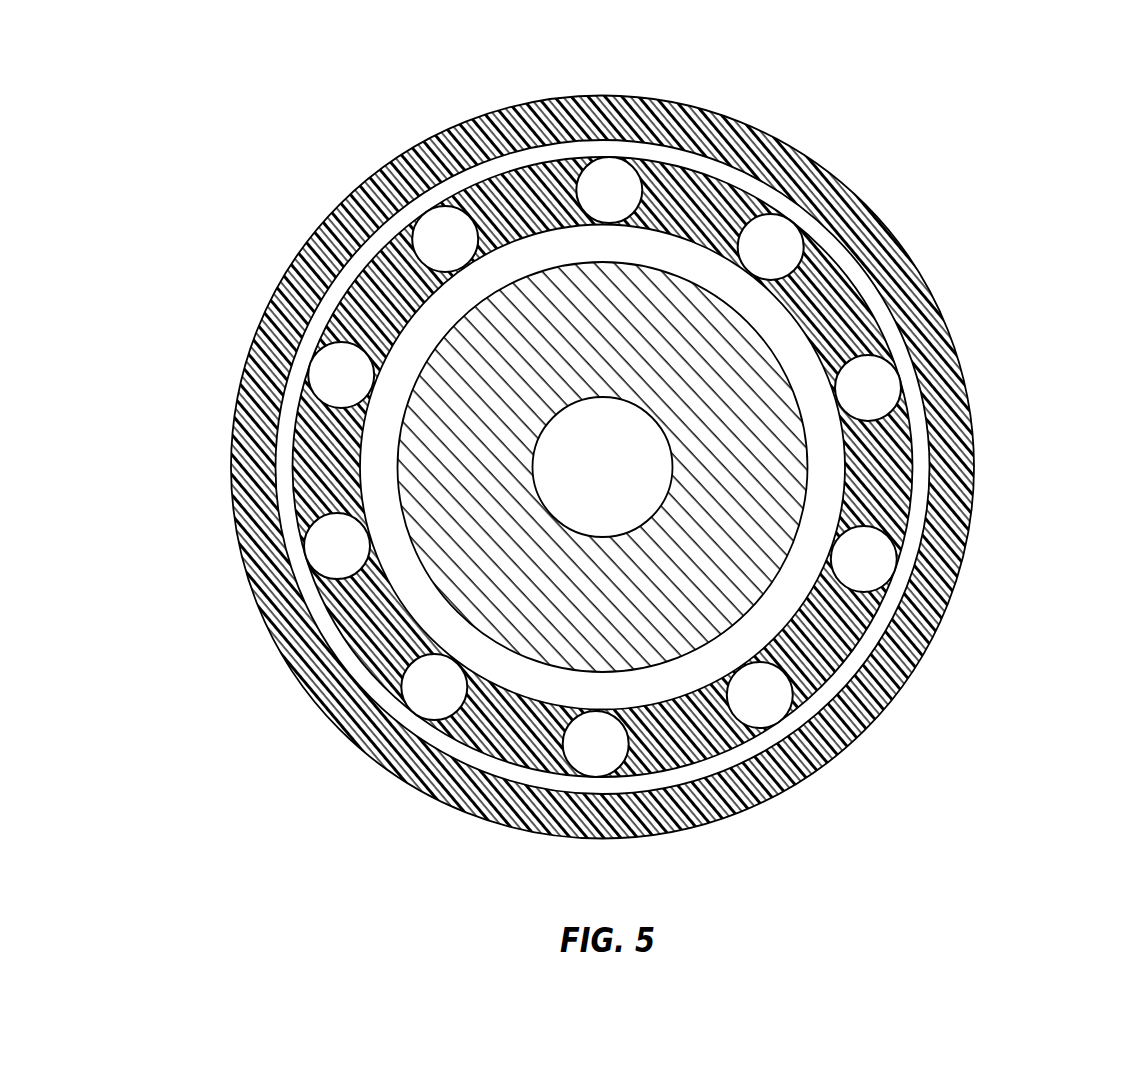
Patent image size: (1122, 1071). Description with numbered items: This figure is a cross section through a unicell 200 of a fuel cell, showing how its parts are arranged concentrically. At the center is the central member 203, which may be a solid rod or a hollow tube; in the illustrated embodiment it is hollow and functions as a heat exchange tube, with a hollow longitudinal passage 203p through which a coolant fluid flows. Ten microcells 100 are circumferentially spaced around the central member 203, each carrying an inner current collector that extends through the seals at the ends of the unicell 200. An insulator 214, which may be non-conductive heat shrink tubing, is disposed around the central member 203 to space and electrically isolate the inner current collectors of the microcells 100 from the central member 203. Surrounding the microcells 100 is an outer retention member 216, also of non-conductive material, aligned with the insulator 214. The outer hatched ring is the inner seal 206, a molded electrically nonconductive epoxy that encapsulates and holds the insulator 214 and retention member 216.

The microcell 100 is at (610, 177).
The unicell 200 is at (910, 154).
The central member 203 is at (758, 452).
The hollow longitudinal passage 203p is at (617, 477).
The inner seal 206 is at (892, 265).
The insulator 214 is at (770, 613).
The outer retention member 216 is at (275, 460).